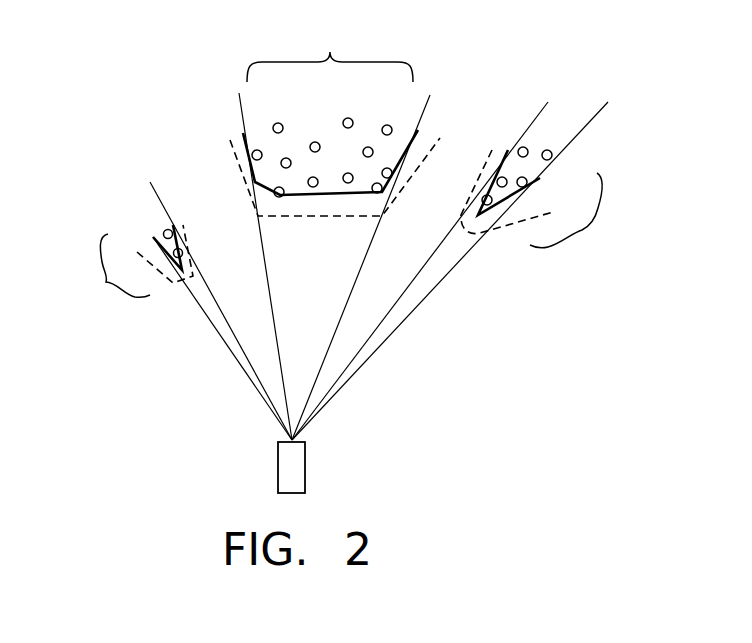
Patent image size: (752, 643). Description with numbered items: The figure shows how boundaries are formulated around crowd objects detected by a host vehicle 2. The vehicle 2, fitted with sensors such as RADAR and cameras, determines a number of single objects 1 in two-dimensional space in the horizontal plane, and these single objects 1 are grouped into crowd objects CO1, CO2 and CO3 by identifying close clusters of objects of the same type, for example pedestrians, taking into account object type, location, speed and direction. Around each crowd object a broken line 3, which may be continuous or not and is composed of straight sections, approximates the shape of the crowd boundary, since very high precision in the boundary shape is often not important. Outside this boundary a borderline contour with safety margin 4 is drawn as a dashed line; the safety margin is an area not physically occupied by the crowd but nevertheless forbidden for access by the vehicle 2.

The particles / wells 1 is at (279, 122).
The host vehicle 2 is at (278, 457).
The broken line 3 is at (242, 142).
The borderline contour with safety margin 4 is at (358, 215).
The crowd object CO1 is at (100, 271).
The crowd object CO2 is at (330, 47).
The crowd object CO3 is at (586, 219).